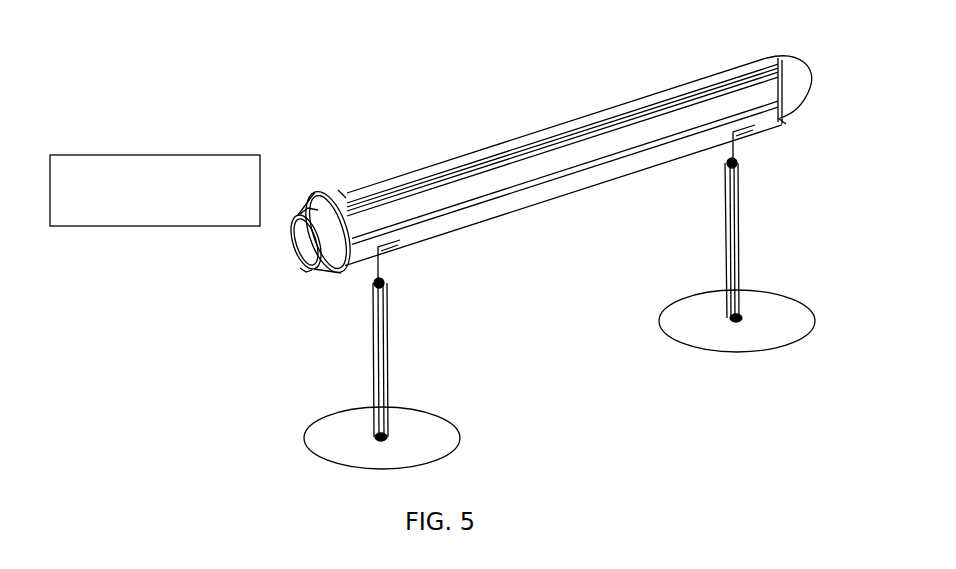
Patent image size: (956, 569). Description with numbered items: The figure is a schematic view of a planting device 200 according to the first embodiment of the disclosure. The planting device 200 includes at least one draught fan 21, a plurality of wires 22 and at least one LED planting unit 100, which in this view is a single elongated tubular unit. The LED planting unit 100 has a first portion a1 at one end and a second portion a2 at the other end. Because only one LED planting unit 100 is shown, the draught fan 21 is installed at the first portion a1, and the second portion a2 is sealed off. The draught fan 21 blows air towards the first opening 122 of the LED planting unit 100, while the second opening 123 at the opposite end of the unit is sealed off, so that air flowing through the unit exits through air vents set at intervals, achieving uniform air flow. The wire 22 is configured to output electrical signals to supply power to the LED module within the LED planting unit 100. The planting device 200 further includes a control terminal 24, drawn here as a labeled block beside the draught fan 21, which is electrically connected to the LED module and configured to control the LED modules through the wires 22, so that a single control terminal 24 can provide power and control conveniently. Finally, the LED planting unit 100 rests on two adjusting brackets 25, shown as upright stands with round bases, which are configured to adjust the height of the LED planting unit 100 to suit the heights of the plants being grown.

The planting device 200 is at (539, 49).
The LED planting unit 100 is at (556, 212).
The second opening 123 is at (805, 72).
The first opening 122 is at (296, 272).
The wire 22 is at (305, 212).
The draught fan 21 is at (291, 266).
The control terminal 24 is at (303, 213).
The adjusting bracket 25 is at (388, 340).
The first portion a1 is at (342, 194).
The second portion a2 is at (782, 123).